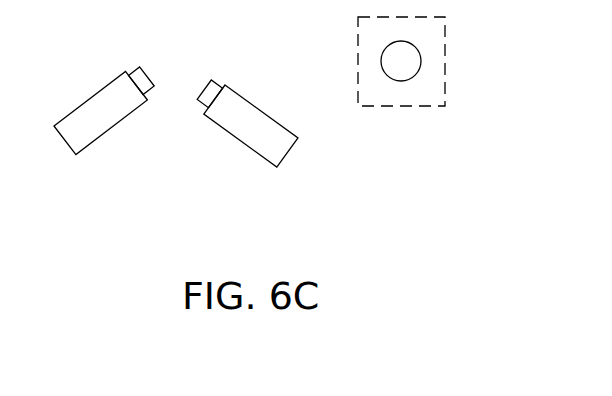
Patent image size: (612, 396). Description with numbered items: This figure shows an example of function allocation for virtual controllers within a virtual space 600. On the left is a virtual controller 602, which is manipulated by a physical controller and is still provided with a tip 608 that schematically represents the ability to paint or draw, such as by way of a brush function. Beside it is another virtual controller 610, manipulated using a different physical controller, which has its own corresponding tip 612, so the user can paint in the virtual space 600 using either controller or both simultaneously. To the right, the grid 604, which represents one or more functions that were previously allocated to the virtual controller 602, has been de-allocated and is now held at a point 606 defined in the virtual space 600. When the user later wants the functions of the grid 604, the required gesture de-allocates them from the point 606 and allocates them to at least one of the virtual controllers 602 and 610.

The virtual space 600 is at (462, 217).
The virtual controller 602 is at (83, 150).
The grid 604 is at (447, 58).
The point 606 is at (397, 81).
The tip 608 is at (140, 67).
The virtual controller 610 is at (263, 160).
The tip 612 is at (212, 79).